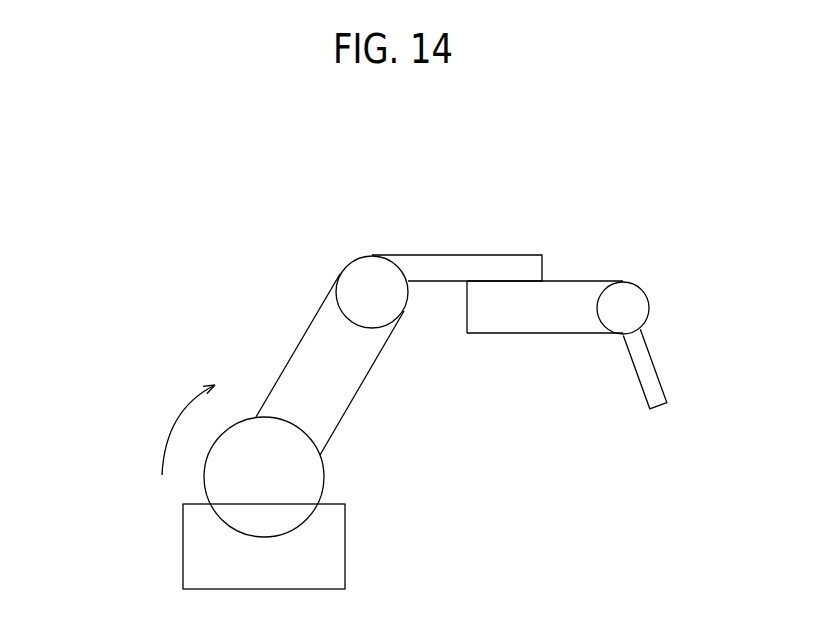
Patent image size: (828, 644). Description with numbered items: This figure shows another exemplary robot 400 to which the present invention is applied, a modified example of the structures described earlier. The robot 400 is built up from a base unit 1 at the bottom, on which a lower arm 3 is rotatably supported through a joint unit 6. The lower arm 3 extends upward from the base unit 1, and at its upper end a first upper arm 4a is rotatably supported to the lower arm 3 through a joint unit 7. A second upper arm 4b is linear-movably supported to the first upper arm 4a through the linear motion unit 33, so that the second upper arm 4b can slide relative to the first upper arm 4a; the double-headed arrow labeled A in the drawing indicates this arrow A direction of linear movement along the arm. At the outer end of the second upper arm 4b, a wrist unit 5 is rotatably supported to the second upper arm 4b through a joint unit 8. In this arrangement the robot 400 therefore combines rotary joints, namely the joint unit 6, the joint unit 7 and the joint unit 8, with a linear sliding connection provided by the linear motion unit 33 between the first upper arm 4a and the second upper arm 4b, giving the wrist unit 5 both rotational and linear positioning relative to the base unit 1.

The robot 400 is at (158, 190).
The base unit 1 is at (183, 563).
The joint unit 6 is at (324, 480).
The lower arm 3 is at (368, 382).
The joint unit 7 is at (347, 262).
The first upper arm 4a is at (416, 254).
The linear motion unit 33 is at (500, 283).
The second upper arm 4b is at (565, 335).
The joint unit 8 is at (642, 283).
The wrist unit 5 is at (660, 363).
The arrow A direction A is at (580, 205).